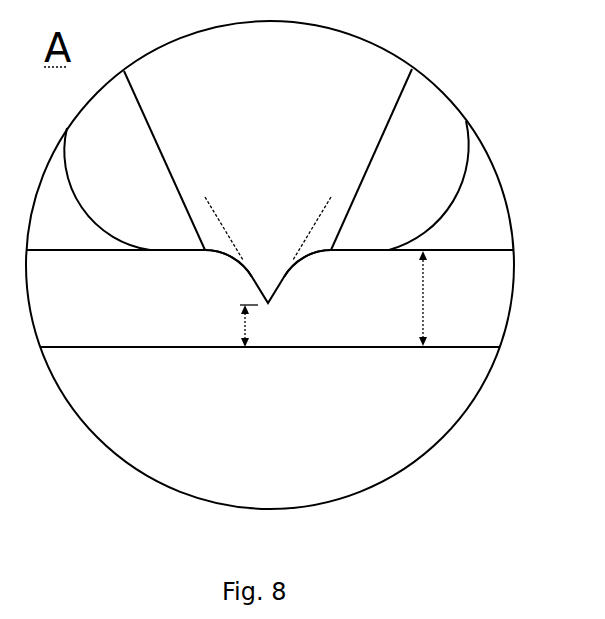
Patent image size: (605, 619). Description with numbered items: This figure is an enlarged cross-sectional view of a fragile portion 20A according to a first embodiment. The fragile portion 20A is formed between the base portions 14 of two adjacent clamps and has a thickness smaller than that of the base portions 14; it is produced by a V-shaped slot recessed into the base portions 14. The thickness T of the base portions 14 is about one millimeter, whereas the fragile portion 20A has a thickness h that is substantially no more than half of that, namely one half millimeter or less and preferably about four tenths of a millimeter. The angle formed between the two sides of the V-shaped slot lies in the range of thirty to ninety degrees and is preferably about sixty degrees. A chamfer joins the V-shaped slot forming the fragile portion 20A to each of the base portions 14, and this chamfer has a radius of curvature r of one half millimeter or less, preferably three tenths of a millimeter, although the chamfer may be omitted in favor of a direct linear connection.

The base portion 14 is at (163, 327).
The fragile portion 20A is at (268, 362).
The radius of curvature r is at (228, 265).
The thickness T is at (413, 298).
The thickness h is at (243, 326).